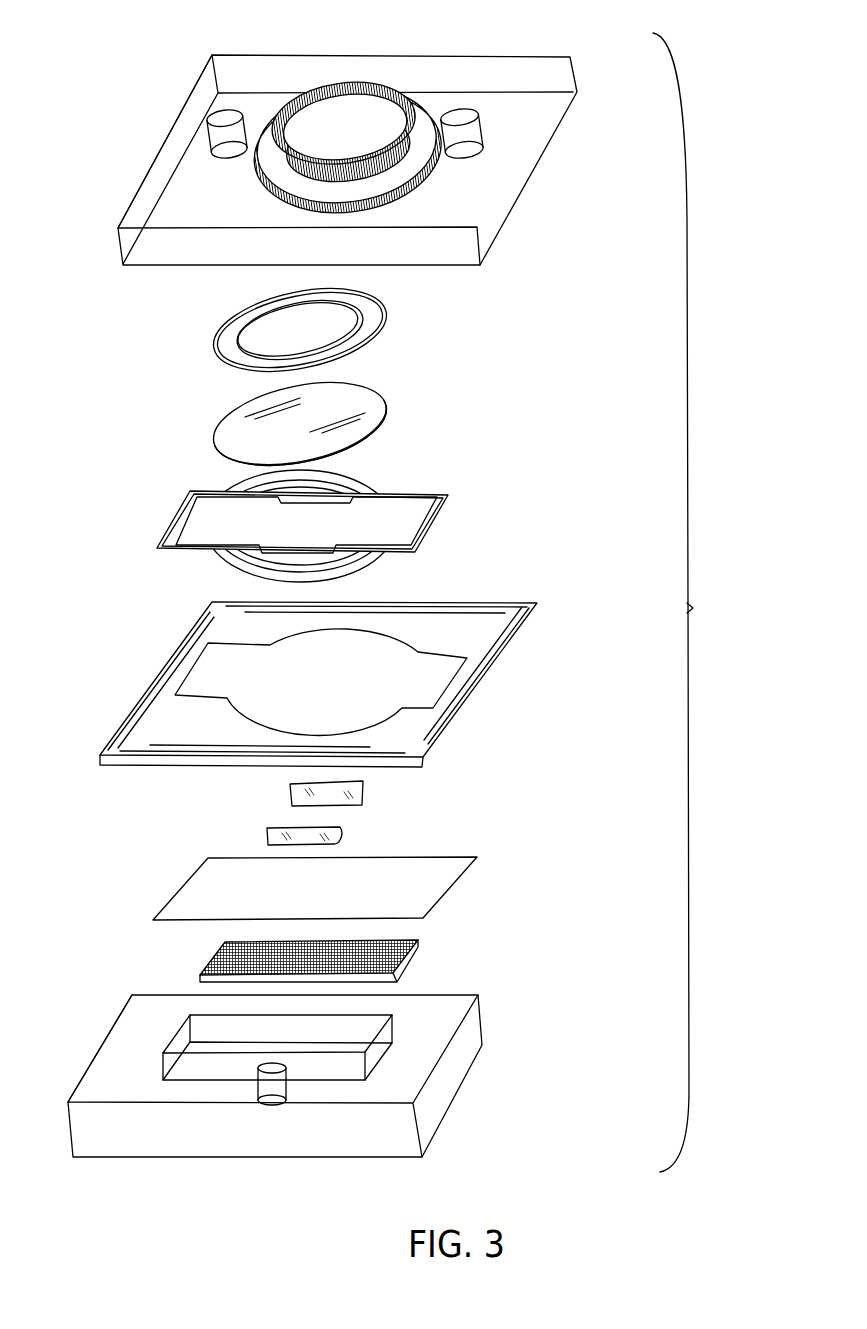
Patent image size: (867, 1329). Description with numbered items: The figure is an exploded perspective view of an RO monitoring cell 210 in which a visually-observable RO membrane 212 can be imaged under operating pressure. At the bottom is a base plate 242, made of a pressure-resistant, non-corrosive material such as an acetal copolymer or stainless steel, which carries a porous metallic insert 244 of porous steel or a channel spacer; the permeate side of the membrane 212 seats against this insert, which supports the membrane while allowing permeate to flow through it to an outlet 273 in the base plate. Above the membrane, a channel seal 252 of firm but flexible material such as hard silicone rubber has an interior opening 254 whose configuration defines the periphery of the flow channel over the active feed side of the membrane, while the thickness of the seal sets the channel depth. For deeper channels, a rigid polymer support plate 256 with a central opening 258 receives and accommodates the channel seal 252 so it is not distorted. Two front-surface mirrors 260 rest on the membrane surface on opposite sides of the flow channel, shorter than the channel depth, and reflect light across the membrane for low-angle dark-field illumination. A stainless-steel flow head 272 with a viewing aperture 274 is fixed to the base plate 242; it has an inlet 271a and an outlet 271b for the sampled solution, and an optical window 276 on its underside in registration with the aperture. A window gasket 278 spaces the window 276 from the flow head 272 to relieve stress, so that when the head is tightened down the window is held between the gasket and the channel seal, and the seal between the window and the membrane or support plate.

The RO monitoring cell 210 is at (700, 602).
The RO membrane 212 is at (465, 878).
The base plate 242 is at (130, 1006).
The porous metallic insert 244 is at (227, 956).
The channel seal 252 is at (391, 486).
The interior opening 254 is at (408, 527).
The support plate 256 is at (482, 682).
The central opening 258 is at (262, 677).
The mirrors 260 is at (267, 837).
The inlet 271a is at (222, 114).
The outlet 271b is at (460, 112).
The flow head 272 is at (532, 153).
The outlet 273 is at (275, 1096).
The viewing aperture 274 is at (347, 95).
The optical window 276 is at (387, 411).
The window gasket 278 is at (373, 304).